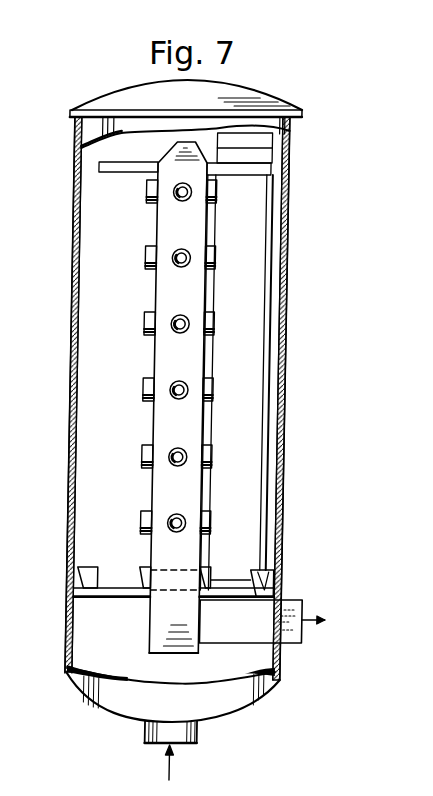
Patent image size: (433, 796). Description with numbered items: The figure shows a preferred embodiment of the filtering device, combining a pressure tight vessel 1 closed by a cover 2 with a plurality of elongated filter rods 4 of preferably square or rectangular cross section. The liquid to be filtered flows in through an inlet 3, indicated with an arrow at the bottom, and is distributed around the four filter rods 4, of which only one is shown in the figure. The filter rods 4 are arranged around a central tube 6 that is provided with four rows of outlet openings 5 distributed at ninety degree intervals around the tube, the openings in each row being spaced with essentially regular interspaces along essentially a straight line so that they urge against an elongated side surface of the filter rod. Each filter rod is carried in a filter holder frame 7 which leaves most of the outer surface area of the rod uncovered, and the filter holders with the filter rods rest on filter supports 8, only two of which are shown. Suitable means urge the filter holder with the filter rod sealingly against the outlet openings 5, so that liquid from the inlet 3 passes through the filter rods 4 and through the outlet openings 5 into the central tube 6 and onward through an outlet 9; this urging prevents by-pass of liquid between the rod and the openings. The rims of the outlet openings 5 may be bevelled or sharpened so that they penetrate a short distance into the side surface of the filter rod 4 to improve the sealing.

The pressure tight vessel 1 is at (287, 527).
The cover 2 is at (294, 97).
The inlet 3 is at (158, 728).
The filter rod 4 is at (253, 357).
The outlet openings 5 is at (152, 262).
The central tube 6 is at (160, 215).
The filter holder frame 7 is at (270, 462).
The filter supports 8 is at (273, 586).
The outlet 9 is at (297, 643).